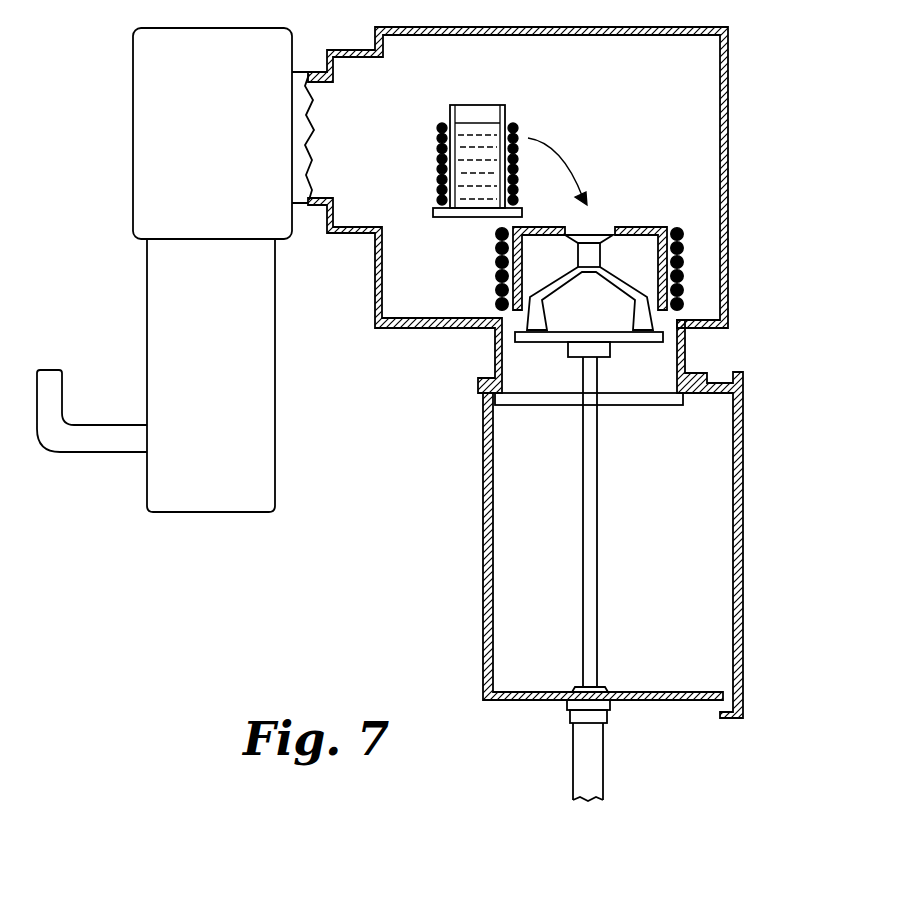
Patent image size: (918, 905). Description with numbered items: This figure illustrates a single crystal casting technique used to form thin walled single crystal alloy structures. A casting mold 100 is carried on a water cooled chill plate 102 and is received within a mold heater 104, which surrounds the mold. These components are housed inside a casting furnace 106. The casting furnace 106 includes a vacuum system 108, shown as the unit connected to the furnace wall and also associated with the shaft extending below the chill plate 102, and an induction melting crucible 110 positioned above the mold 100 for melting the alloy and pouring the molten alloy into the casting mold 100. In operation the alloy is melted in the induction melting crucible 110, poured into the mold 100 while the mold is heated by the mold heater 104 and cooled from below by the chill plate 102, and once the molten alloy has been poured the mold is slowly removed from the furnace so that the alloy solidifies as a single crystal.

The casting mold 100 is at (533, 323).
The water cooled chill plate 102 is at (630, 338).
The mold heater 104 is at (684, 248).
The casting furnace 106 is at (748, 143).
The vacuum system 108 is at (152, 106).
The induction melting crucible 110 is at (505, 107).